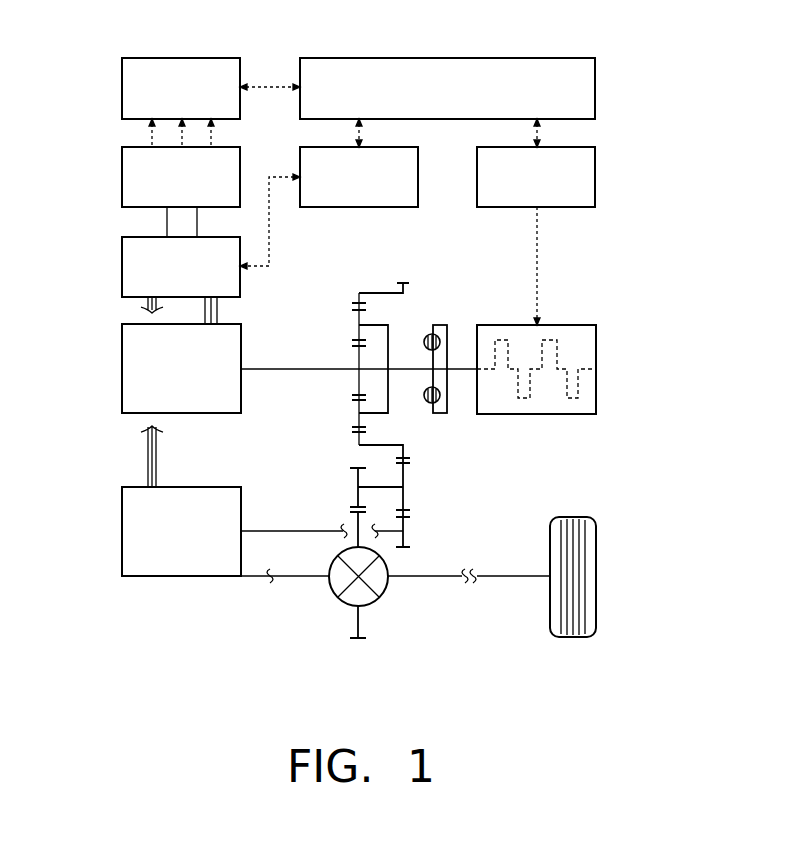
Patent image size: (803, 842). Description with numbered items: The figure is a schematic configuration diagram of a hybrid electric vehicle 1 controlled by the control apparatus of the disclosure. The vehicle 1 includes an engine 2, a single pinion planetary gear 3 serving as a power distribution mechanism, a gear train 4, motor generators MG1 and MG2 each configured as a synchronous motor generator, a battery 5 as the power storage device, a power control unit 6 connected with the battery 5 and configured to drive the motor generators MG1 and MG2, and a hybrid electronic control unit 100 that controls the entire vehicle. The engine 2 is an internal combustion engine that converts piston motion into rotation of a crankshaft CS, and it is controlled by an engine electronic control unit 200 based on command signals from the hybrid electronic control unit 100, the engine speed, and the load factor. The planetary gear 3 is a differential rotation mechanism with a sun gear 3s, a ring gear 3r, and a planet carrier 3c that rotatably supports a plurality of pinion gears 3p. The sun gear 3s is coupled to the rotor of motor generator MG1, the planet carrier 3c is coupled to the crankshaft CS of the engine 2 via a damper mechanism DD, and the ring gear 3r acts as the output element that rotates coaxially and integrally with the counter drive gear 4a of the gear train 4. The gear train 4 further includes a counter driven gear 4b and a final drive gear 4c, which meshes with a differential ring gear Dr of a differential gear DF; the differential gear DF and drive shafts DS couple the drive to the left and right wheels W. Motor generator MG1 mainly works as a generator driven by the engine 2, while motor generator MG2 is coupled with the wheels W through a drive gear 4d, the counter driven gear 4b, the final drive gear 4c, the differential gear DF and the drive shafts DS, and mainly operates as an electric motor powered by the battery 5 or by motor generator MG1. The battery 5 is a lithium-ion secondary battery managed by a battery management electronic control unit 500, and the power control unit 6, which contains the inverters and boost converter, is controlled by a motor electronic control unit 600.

The hybrid electric vehicle 1 is at (92, 445).
The engine 2 is at (596, 353).
The single pinion planetary gear 3 is at (351, 343).
The planet carrier 3c is at (383, 325).
The ring gear 3r is at (355, 298).
The sun gear 3s is at (357, 360).
The pinion gears 3p is at (357, 416).
The gear train 4 is at (393, 488).
The counter drive gear 4a is at (358, 445).
The counter driven gear 4b is at (405, 487).
The final drive gear 4c is at (357, 483).
The drive gear 4d is at (405, 530).
The battery 5 is at (122, 170).
The power control unit 6 is at (122, 260).
The hybrid electronic control unit 100 is at (596, 82).
The engine electronic control unit 200 is at (596, 170).
The battery management electronic control unit 500 is at (122, 85).
The motor electronic control unit 600 is at (418, 192).
The motor generator MG1 is at (185, 413).
The motor generator MG2 is at (174, 577).
The damper mechanism DD is at (449, 343).
The crankshaft CS is at (598, 372).
The differential gear DF is at (382, 592).
The differential ring gear Dr is at (355, 623).
The drive shafts DS is at (521, 578).
The wheels W is at (596, 570).